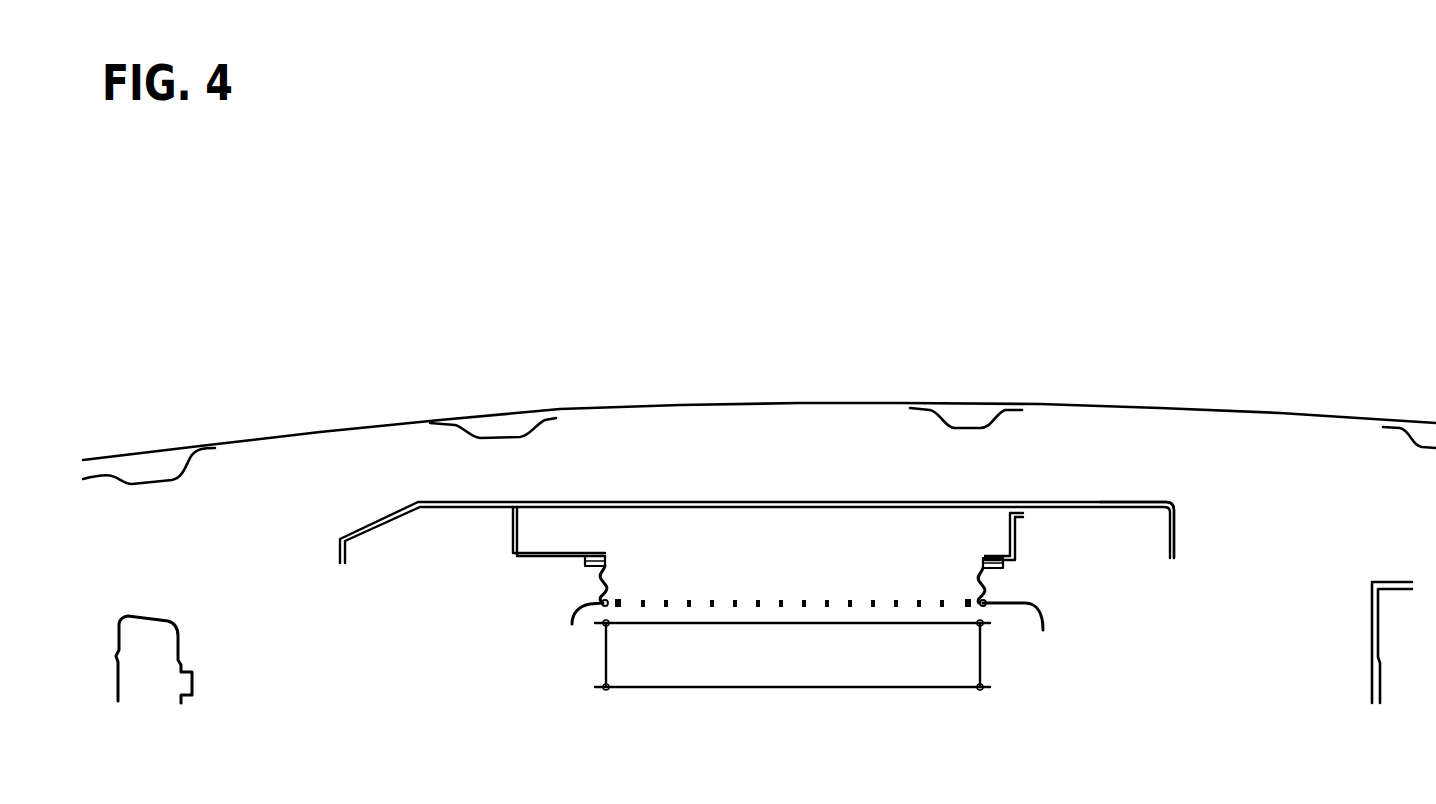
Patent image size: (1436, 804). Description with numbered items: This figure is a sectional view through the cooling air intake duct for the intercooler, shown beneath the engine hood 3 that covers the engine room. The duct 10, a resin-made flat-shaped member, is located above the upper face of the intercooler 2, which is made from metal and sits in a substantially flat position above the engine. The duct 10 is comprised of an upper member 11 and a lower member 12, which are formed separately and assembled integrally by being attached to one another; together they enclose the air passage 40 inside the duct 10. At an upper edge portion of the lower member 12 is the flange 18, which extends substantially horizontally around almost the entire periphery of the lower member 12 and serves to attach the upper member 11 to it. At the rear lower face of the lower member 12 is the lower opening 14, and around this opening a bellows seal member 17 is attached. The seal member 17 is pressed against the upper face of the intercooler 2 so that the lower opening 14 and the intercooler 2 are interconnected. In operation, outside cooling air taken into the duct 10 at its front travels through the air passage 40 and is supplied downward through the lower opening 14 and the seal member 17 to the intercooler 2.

The intercooler 2 is at (982, 660).
The engine hood 3 is at (808, 402).
The duct 10 is at (703, 503).
The upper member 11 is at (1072, 507).
The lower member 12 is at (1015, 528).
The lower opening 14 is at (980, 554).
The bellows seal member 17 is at (987, 582).
The flange 18 is at (507, 510).
The air passage 40 is at (822, 568).